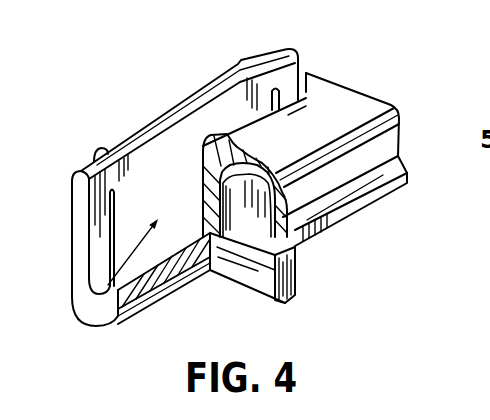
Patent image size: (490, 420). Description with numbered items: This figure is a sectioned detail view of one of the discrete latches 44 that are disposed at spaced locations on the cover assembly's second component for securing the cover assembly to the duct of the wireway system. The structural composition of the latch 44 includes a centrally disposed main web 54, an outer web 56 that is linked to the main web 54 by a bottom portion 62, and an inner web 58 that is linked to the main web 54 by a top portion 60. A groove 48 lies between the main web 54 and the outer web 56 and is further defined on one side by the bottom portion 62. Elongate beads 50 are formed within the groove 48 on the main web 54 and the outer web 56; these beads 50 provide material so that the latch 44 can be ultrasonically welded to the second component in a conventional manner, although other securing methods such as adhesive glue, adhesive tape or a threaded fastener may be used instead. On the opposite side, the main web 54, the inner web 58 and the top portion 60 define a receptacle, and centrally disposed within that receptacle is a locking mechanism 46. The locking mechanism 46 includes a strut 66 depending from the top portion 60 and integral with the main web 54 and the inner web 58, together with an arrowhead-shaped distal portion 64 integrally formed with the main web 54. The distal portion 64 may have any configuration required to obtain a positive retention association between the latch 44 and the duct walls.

The latch 44 is at (173, 78).
The locking mechanism 46 is at (271, 309).
The groove 48 is at (78, 285).
The elongate beads 50 is at (115, 215).
The main web 54 is at (170, 262).
The outer web 56 is at (78, 212).
The inner web 58 is at (385, 140).
The top portion 60 is at (345, 107).
The bottom portion 62 is at (97, 313).
The distal portion 64 is at (297, 271).
The strut 66 is at (244, 200).